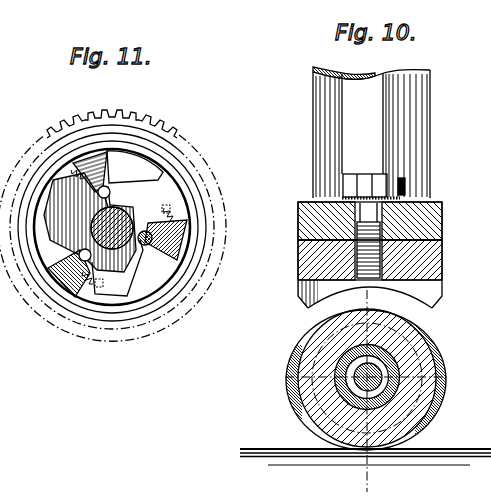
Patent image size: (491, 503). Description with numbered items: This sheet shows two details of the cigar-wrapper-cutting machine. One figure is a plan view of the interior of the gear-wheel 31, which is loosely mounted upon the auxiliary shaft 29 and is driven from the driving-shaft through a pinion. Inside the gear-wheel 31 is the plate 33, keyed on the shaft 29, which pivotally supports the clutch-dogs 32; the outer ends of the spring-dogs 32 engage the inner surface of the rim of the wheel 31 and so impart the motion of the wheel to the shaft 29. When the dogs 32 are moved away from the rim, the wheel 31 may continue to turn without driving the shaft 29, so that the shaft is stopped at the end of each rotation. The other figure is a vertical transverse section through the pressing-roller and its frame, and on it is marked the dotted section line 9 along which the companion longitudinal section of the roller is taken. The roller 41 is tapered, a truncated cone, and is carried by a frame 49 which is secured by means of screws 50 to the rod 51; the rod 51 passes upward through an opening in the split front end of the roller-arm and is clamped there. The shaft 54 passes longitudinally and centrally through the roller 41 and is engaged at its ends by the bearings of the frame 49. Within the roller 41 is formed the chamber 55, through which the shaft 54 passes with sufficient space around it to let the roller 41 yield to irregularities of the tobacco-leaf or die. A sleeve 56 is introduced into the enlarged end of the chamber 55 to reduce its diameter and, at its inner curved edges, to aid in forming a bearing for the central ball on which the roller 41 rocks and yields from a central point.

In FIG. 10, the section line 9 is at (370, 172).
In FIG. 11, the auxiliary shaft 29 is at (120, 186).
In FIG. 11, the gear-wheel 31 is at (181, 137).
In FIG. 11, the clutch-dogs 32 is at (100, 153).
In FIG. 11, the plate 33 is at (102, 234).
In FIG. 10, the roller 41 is at (436, 380).
In FIG. 10, the frame 49 is at (443, 268).
In FIG. 10, the screws 50 is at (443, 206).
In FIG. 10, the rod 51 is at (383, 132).
In FIG. 10, the shaft 54 is at (300, 375).
In FIG. 10, the chamber 55 is at (294, 406).
In FIG. 10, the sleeve 56 is at (440, 376).